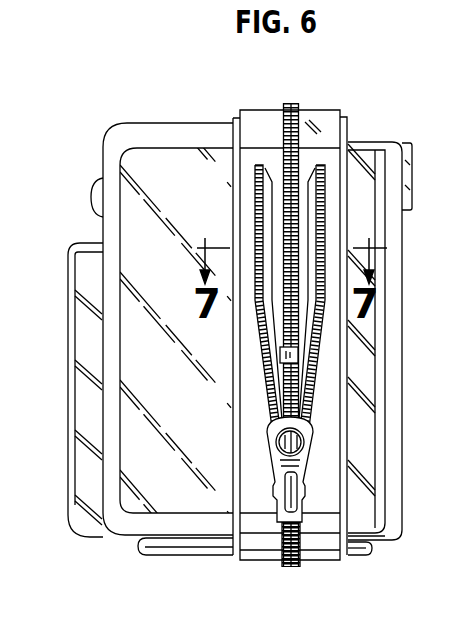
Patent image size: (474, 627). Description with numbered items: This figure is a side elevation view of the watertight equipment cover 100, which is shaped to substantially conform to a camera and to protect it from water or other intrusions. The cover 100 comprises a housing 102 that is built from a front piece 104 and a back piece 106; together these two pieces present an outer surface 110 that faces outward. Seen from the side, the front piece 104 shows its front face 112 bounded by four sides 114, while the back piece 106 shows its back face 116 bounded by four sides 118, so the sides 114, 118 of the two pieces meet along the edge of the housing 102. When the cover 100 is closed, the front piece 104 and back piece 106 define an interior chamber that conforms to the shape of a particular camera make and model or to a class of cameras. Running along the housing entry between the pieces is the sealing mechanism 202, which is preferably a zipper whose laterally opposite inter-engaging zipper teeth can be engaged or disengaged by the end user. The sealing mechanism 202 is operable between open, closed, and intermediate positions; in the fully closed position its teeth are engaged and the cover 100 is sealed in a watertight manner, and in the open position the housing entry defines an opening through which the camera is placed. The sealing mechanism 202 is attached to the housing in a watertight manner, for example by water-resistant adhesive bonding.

The watertight equipment cover 100 is at (368, 116).
The housing 102 is at (384, 139).
The front piece 104 is at (372, 542).
The back piece 106 is at (100, 537).
The outer surface 110 is at (72, 488).
The front face 112 is at (402, 472).
The sides 114 is at (328, 110).
The back face 116 is at (72, 385).
The sides 118 is at (172, 165).
The sealing mechanism 202 is at (300, 326).